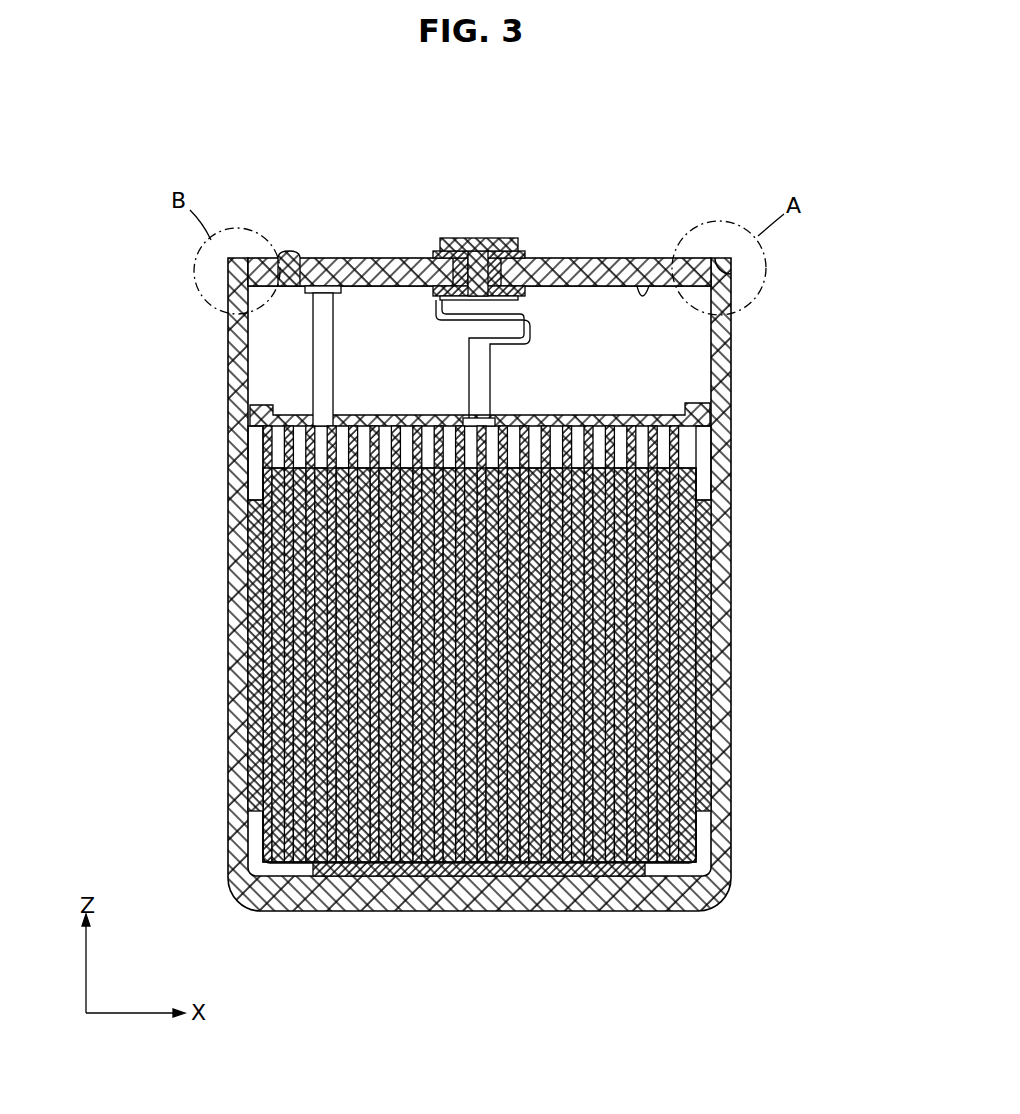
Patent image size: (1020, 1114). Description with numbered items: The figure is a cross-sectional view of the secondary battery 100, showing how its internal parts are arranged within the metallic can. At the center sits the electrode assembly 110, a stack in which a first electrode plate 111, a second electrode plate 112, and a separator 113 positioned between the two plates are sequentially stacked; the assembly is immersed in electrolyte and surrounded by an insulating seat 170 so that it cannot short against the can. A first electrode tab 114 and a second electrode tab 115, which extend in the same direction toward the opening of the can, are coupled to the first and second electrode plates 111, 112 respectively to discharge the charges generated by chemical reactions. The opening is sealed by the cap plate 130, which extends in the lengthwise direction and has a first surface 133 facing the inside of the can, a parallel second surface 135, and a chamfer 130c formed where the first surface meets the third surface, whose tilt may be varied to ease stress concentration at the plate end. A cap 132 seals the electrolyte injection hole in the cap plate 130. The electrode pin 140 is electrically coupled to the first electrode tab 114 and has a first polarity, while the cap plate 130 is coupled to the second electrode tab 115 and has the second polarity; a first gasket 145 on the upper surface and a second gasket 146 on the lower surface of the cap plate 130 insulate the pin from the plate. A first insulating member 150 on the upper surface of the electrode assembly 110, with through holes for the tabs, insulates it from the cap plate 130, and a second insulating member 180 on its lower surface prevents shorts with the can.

The secondary battery 100 is at (764, 158).
The electrode assembly 110 is at (578, 644).
The first electrode plate 111 is at (657, 512).
The second electrode plate 112 is at (670, 475).
The separator 113 is at (663, 490).
The first electrode tab 114 is at (478, 352).
The second electrode tab 115 is at (313, 340).
The cap plate 130 is at (546, 240).
The chamfer 130c is at (718, 262).
The cap 132 is at (283, 243).
The first surface 133 is at (629, 290).
The second surface 135 is at (585, 250).
The electrode pin 140 is at (471, 230).
The first gasket 145 is at (515, 245).
The second gasket 146 is at (428, 283).
The first insulating member 150 is at (693, 410).
The insulating seat 170 is at (245, 718).
The second insulating member 180 is at (375, 862).